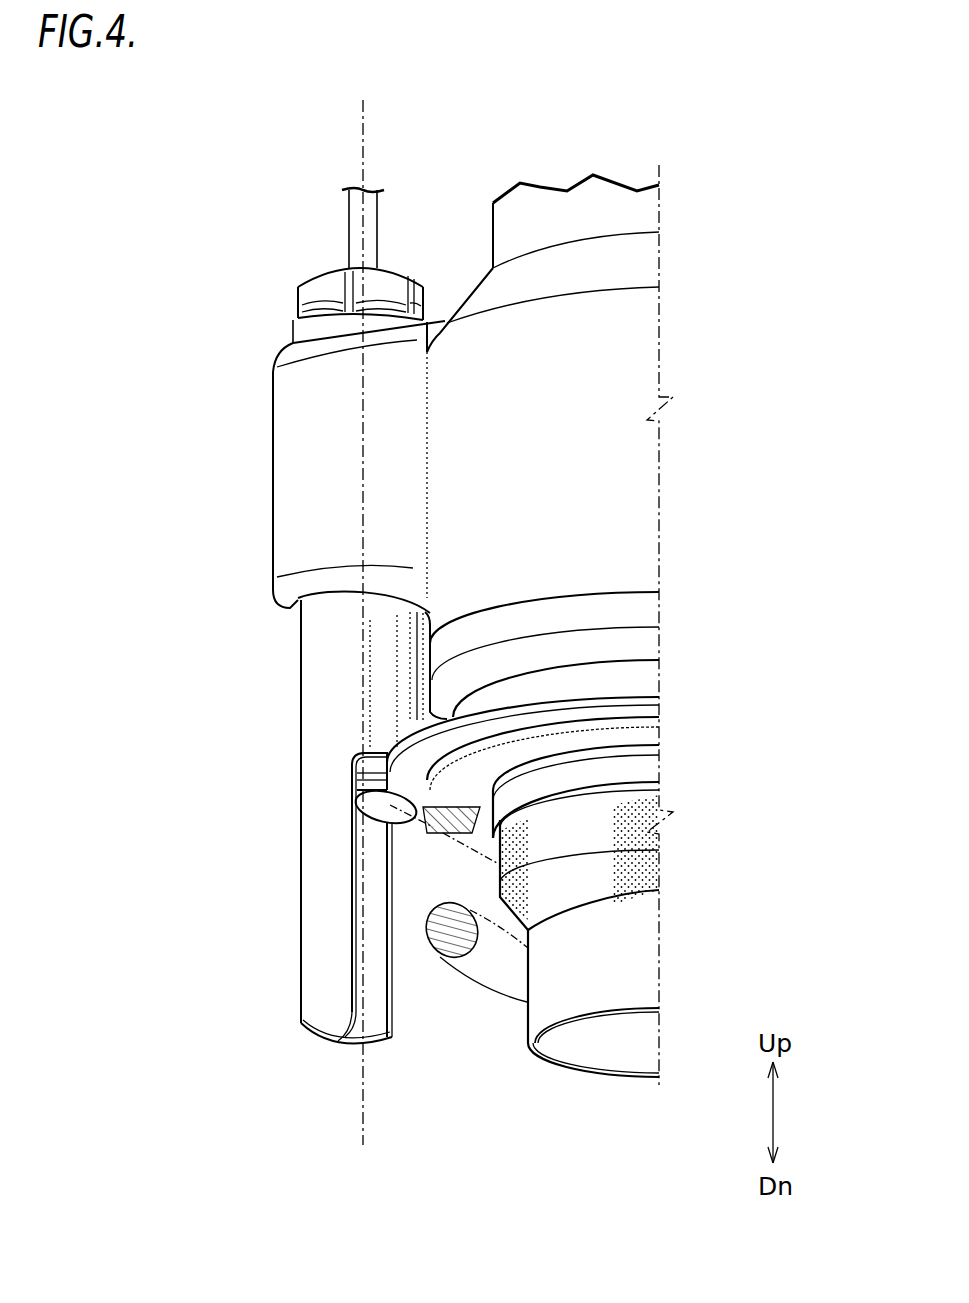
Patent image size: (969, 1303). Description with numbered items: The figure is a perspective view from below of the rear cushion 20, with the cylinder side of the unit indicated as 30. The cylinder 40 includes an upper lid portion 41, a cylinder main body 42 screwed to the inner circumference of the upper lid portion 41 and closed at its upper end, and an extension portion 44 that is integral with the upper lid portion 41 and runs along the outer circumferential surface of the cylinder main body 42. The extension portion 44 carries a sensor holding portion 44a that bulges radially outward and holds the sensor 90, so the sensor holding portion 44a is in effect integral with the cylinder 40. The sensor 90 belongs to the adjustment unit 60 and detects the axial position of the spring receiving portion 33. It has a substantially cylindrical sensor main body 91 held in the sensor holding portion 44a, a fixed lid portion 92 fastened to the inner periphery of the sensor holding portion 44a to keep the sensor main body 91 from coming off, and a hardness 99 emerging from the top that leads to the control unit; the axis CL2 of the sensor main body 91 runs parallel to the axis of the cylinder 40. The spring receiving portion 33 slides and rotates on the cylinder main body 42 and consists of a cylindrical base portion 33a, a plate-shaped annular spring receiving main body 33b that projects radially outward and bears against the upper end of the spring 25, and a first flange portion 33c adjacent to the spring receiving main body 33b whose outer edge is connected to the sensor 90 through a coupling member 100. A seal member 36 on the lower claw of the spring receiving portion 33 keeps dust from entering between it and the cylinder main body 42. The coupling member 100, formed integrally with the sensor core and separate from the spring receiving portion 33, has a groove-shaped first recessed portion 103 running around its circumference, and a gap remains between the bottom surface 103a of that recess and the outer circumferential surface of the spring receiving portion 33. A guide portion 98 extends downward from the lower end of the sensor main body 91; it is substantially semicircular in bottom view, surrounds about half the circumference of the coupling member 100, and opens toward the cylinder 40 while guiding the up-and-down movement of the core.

The sensor unit 20 is at (207, 165).
The housing 30 is at (637, 143).
The cylinder 40 is at (553, 181).
The upper lid portion 41 is at (617, 218).
The extension portion 44 is at (620, 370).
The sensor holding portion 44a is at (305, 470).
The hardness 99 is at (365, 230).
The sensor 90 is at (310, 268).
The adjustment unit 60 is at (315, 267).
The fixed lid portion 92 is at (292, 338).
The sensor main body 91 is at (335, 684).
The spring receiving portion 33 is at (599, 715).
The cylindrical base portion 33a is at (620, 791).
The spring receiving main body 33b is at (637, 739).
The first flange portion 33c is at (635, 700).
The seal member 36 is at (633, 815).
The cylinder main body 42 is at (632, 955).
The first recessed portion 103 is at (280, 897).
The bottom surface 103a is at (368, 783).
The coupling member 100 is at (377, 811).
The guide portion 98 is at (322, 928).
The spring 25 is at (470, 987).
The axis CL2 is at (360, 1083).